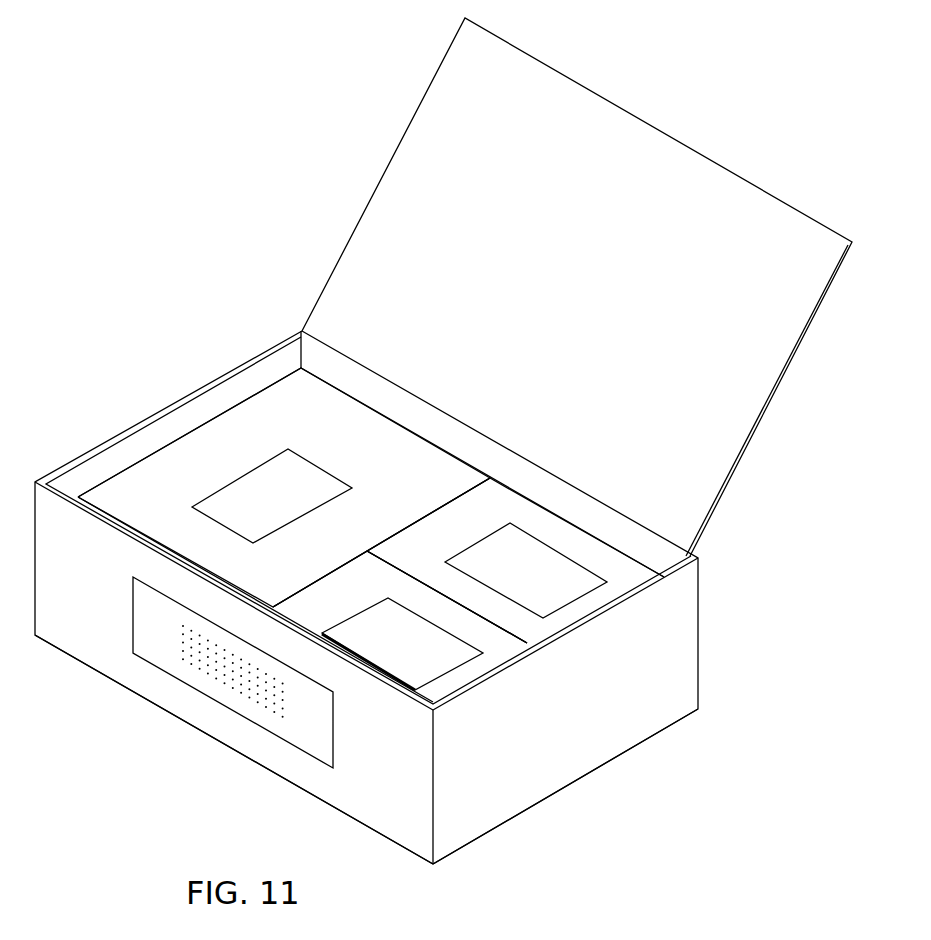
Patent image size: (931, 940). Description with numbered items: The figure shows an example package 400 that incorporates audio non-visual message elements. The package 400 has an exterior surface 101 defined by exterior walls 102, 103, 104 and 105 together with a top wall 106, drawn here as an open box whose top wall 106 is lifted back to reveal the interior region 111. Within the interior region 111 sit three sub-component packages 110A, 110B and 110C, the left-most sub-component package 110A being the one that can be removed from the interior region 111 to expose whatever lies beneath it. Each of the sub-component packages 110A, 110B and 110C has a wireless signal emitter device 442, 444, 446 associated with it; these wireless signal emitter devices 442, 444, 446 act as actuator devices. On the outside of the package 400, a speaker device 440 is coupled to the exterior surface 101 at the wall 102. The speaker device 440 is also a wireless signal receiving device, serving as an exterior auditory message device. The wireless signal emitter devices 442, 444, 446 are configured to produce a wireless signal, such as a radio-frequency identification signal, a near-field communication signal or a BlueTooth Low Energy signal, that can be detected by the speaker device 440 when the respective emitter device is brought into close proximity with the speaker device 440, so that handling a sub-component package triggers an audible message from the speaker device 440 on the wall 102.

The package 400 is at (94, 105).
The exterior surface 101 is at (365, 597).
The exterior wall 102 is at (98, 658).
The exterior wall 103 is at (537, 799).
The exterior wall 104 is at (420, 418).
The exterior wall 105 is at (263, 353).
The top wall 106 is at (372, 196).
The interior region 111 is at (338, 481).
The sub-component package 110A is at (284, 482).
The sub-component package 110B is at (515, 525).
The sub-component package 110C is at (400, 564).
The speaker device 440 is at (249, 721).
The wireless signal emitter device 442 is at (312, 463).
The wireless signal emitter device 444 is at (362, 606).
The wireless signal emitter device 446 is at (570, 556).